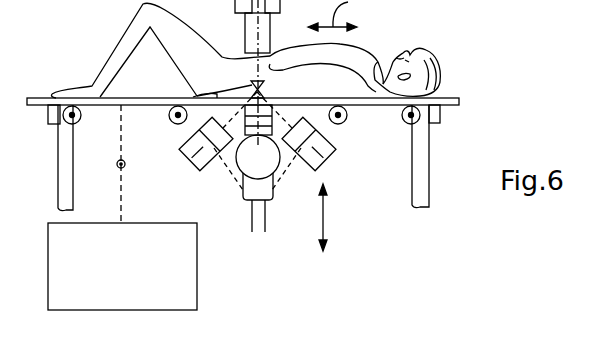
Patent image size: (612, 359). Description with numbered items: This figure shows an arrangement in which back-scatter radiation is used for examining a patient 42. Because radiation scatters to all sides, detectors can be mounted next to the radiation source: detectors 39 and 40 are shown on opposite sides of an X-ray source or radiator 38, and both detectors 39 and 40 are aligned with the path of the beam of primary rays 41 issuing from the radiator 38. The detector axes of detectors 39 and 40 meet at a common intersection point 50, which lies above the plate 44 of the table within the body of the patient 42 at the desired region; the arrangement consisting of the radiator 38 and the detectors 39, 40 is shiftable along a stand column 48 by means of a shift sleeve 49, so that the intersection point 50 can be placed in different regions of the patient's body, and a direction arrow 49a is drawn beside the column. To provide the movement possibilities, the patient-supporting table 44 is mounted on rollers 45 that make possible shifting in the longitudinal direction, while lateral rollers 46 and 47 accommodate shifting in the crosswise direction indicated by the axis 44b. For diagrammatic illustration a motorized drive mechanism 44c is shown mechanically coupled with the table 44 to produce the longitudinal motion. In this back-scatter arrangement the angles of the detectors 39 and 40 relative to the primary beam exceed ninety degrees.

The X-ray source 38 is at (272, 168).
The detector 39 is at (194, 168).
The detector 40 is at (318, 160).
The primary rays 41 is at (245, 43).
The patient 42 is at (358, 55).
The patient-supporting table 44 is at (131, 100).
The axis 44b is at (125, 166).
The motorized drive mechanism 44c is at (153, 302).
The rollers 45 is at (75, 123).
The lateral roller 46 is at (52, 127).
The lateral roller 47 is at (434, 122).
The stand column 48 is at (258, 217).
The shift sleeve 49 is at (249, 190).
The vertical adjustment direction arrow 49a is at (323, 216).
The intersection point 50 is at (260, 82).